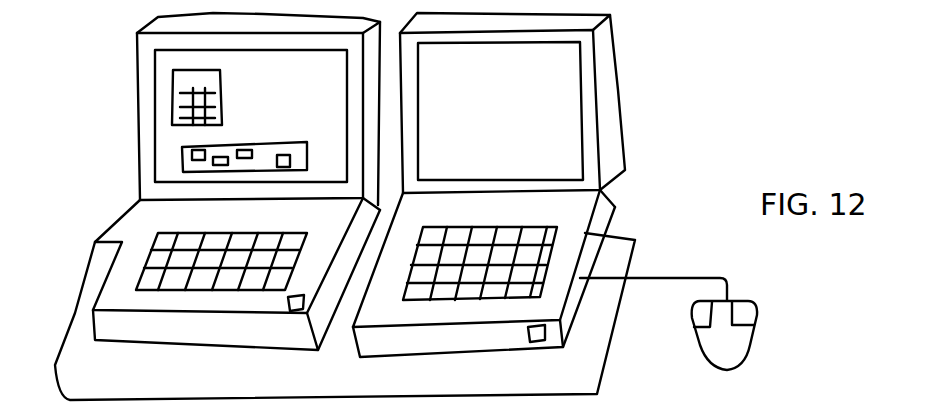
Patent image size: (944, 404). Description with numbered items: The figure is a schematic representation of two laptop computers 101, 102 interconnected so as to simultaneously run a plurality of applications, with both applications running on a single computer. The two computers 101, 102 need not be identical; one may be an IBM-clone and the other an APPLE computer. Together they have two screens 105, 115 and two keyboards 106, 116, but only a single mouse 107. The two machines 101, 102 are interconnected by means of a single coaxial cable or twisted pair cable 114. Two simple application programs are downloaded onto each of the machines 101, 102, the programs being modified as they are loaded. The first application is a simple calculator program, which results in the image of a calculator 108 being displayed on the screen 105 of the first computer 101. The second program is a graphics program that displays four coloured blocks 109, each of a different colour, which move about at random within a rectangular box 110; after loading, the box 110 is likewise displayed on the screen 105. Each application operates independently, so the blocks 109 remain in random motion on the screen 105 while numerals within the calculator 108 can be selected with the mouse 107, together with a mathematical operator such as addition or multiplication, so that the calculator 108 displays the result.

The laptop computer 101 is at (140, 131).
The laptop computer 102 is at (610, 121).
The screen 105 is at (307, 100).
The keyboard 106 is at (158, 258).
The mouse 107 is at (742, 343).
The calculator 108 is at (175, 82).
The coloured blocks 109 is at (276, 160).
The rectangular box 110 is at (247, 172).
The cable 114 is at (153, 400).
The screen 115 is at (555, 98).
The keyboard 116 is at (425, 290).